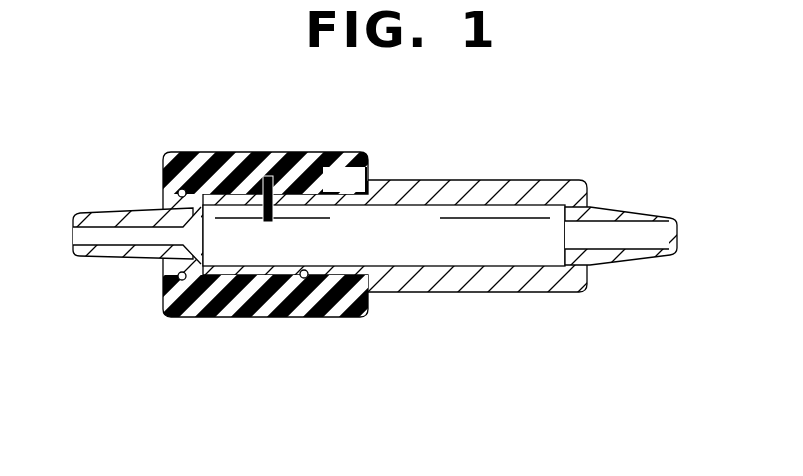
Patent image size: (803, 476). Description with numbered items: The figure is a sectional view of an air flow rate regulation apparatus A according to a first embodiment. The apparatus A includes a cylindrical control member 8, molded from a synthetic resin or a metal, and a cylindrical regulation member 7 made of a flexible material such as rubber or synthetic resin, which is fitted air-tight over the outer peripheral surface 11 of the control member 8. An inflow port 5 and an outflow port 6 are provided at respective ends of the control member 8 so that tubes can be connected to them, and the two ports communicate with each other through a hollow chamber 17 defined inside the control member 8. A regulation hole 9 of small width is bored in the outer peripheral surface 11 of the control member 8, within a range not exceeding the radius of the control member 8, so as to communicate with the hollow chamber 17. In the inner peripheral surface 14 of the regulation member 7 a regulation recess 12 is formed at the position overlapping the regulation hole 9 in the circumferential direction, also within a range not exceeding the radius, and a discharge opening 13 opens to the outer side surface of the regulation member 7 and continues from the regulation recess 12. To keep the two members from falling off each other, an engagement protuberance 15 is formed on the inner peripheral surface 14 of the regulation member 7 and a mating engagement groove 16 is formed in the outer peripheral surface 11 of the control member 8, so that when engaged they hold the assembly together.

The inflow port 5 is at (75, 234).
The outflow port 6 is at (620, 236).
The regulation member 7 is at (228, 162).
The control member 8 is at (437, 293).
The regulation hole 9 is at (276, 166).
The outer peripheral surface 11 is at (220, 290).
The regulation recess 12 is at (313, 158).
The discharge opening 13 is at (353, 183).
The inner peripheral surface 14 is at (302, 279).
The engagement protuberance 15 is at (182, 189).
The engagement groove 16 is at (182, 281).
The hollow chamber 17 is at (510, 240).
The air flow rate regulation apparatus A is at (262, 146).